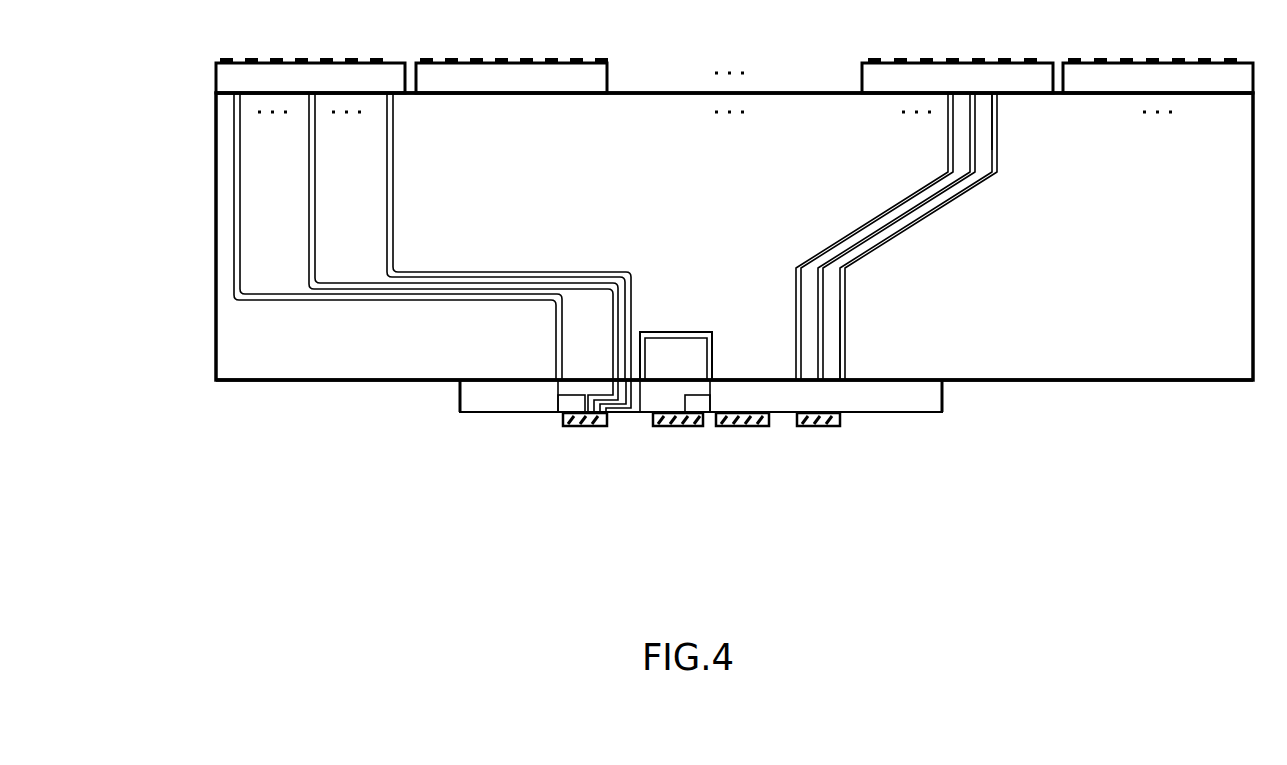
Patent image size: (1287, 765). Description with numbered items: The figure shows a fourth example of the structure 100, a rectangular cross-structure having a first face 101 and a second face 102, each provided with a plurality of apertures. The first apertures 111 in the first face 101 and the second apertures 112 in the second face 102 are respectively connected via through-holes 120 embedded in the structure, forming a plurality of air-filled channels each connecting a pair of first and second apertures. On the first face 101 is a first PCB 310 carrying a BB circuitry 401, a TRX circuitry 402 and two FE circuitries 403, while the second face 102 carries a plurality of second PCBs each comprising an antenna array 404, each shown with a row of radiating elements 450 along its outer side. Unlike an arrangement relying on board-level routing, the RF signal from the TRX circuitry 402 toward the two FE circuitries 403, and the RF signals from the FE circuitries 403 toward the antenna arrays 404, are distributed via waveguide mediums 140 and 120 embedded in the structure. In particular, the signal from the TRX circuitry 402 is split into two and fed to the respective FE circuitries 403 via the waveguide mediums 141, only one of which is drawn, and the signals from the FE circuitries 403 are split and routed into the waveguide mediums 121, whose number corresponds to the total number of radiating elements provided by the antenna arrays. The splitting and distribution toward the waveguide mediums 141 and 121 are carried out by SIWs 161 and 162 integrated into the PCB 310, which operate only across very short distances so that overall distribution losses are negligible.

The structure 100 is at (217, 238).
The first face 101 is at (995, 390).
The second face 102 is at (648, 82).
The first apertures 111 is at (848, 375).
The second apertures 112 is at (1006, 99).
The through-holes 120 is at (313, 237).
The waveguide mediums 121 is at (241, 150).
The waveguide mediums 140 is at (686, 332).
The waveguide mediums 141 is at (691, 328).
The SIW 161 is at (572, 403).
The SIW 162 is at (716, 394).
The first PCB 310 is at (459, 399).
The BB circuitry 401 is at (724, 428).
The TRX circuitry 402 is at (680, 428).
The FE circuitries 403 is at (590, 427).
The antenna array 404 is at (734, 78).
The electrode bumps 450 is at (908, 60).